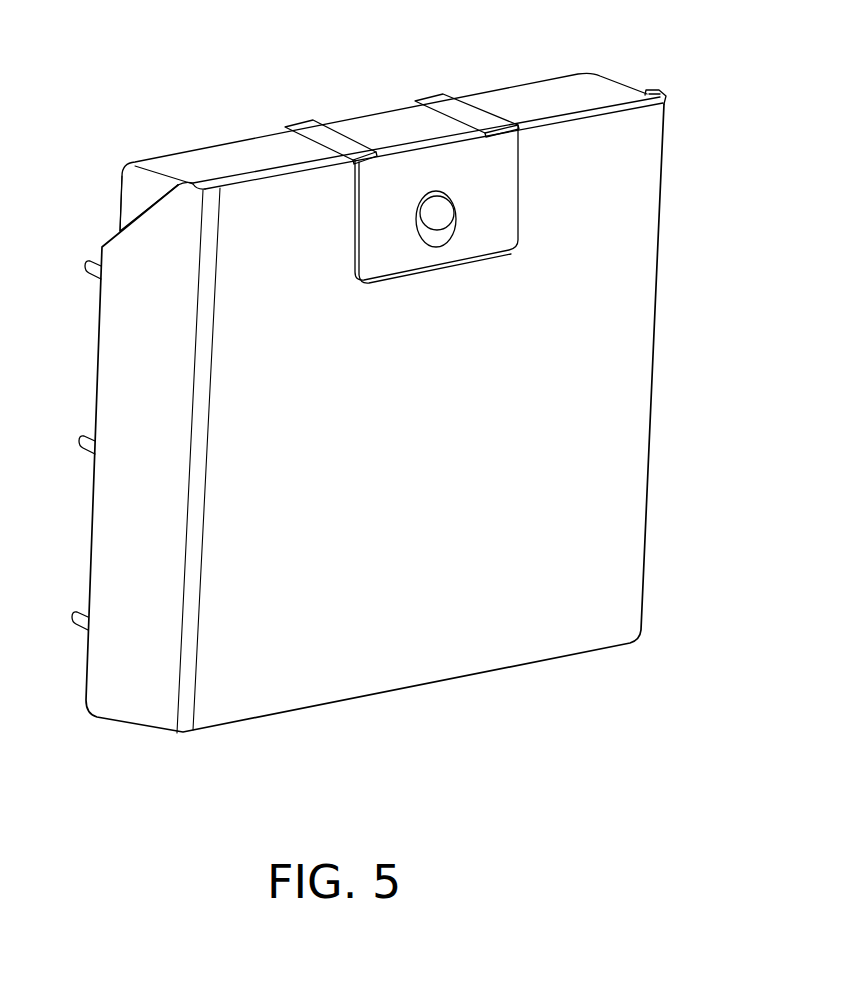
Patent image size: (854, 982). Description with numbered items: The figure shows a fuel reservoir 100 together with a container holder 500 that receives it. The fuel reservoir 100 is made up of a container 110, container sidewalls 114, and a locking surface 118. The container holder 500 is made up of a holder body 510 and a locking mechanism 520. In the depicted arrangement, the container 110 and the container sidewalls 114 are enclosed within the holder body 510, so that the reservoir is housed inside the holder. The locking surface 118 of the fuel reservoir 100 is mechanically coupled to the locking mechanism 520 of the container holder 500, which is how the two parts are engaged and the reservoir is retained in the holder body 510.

The fuel reservoir 100 is at (427, 155).
The container 110 is at (381, 135).
The container sidewalls 114 is at (152, 194).
The locking surface 118 is at (445, 210).
The container holder 500 is at (107, 742).
The holder body 510 is at (233, 663).
The locking mechanism 520 is at (437, 245).